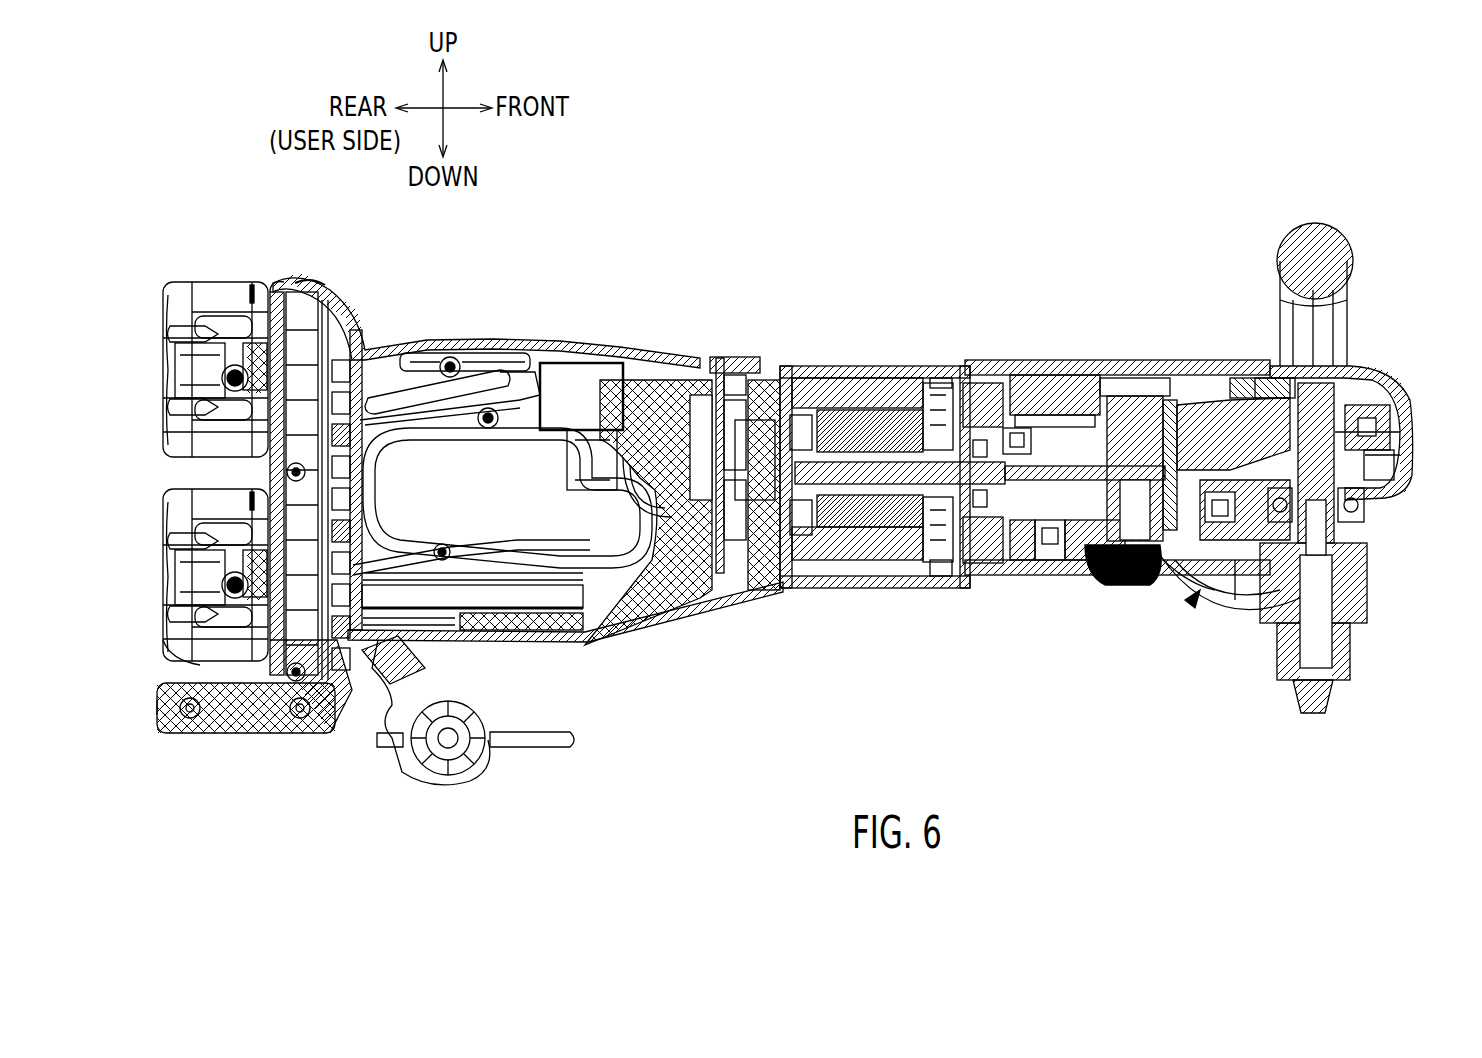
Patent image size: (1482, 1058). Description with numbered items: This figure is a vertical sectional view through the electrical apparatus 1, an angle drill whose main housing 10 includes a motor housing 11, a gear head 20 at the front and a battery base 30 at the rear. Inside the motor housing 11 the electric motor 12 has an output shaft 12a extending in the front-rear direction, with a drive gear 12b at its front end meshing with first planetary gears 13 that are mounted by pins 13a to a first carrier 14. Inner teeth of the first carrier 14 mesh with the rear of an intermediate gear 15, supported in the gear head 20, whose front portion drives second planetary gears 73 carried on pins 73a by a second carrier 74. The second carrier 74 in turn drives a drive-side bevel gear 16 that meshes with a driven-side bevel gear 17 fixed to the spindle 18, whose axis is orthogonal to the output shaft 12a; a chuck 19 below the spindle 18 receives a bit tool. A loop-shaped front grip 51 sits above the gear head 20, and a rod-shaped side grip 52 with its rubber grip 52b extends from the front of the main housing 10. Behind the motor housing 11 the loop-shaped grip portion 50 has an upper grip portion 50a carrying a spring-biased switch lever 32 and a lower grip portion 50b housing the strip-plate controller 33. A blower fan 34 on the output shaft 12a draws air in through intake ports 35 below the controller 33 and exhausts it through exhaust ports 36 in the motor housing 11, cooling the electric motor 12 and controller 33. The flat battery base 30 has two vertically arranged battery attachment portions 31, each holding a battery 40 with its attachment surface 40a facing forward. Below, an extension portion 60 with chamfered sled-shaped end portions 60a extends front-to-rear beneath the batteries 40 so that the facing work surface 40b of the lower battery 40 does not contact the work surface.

The electrical apparatus 1 is at (693, 222).
The main housing 10 is at (787, 283).
The motor housing 11 is at (841, 360).
The electric motor 12 is at (921, 348).
The output shaft 12a is at (873, 365).
The drive gear 12b is at (983, 580).
The first planetary gears 13 is at (981, 362).
The pin 13a is at (1040, 362).
The first carrier 14 is at (1080, 360).
The intermediate gear 15 is at (1110, 360).
The drive-side bevel gear 16 is at (1222, 365).
The driven-side bevel gear 17 is at (1254, 364).
The spindle 18 is at (1390, 508).
The chuck 19 is at (1370, 600).
The gear head 20 is at (1420, 395).
The battery base 30 is at (363, 300).
The battery attachment portion 31 is at (275, 282).
The switch lever 32 is at (597, 362).
The controller 33 is at (583, 616).
The blower fan 34 is at (905, 580).
The intake ports 35 is at (555, 644).
The exhaust ports 36 is at (952, 590).
The battery 40 is at (218, 300).
The attachment surface 40a is at (306, 278).
The facing work surface 40b is at (195, 668).
The grip portion 50 is at (537, 345).
The upper grip portion 50a is at (492, 340).
The lower grip portion 50b is at (460, 700).
The front grip 51 is at (1345, 258).
The side grip 52 is at (1195, 598).
The rubber grip 52b is at (1240, 605).
The extension portion 60 is at (283, 735).
The end portions 60a is at (160, 730).
The second planetary gears 73 is at (1141, 360).
The pin 73a is at (1155, 365).
The second carrier 74 is at (1188, 362).